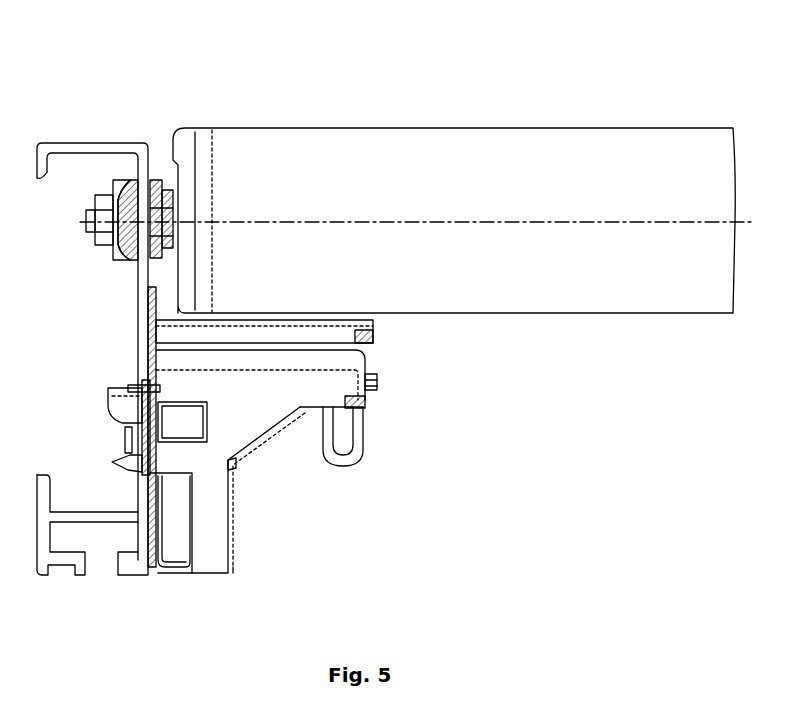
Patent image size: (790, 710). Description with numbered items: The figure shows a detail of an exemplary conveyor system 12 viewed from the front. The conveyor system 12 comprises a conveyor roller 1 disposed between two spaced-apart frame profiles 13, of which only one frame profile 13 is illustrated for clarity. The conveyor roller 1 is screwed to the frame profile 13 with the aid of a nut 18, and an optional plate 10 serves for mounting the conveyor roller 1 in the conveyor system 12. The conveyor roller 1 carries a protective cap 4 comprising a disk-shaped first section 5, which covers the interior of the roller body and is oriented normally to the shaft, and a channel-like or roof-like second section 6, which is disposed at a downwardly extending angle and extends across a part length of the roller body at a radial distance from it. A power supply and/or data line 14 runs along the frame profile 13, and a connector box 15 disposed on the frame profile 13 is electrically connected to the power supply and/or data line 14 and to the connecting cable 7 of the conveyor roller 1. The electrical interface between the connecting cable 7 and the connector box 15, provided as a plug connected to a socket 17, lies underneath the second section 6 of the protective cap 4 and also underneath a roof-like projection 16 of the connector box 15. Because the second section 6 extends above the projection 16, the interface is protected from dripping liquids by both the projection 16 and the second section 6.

The conveyor roller 1 is at (572, 135).
The conveyor system 12 is at (485, 81).
The frame profile 13 is at (110, 147).
The plate 10 is at (153, 213).
The nut 18 is at (102, 242).
The first section 5 is at (150, 295).
The second section 6 is at (375, 335).
The protective cap 4 is at (167, 333).
The projection 16 is at (360, 400).
The socket 17 is at (338, 410).
The connecting cable 7 is at (330, 450).
The connector box 15 is at (205, 538).
The power supply and/or data line 14 is at (170, 547).